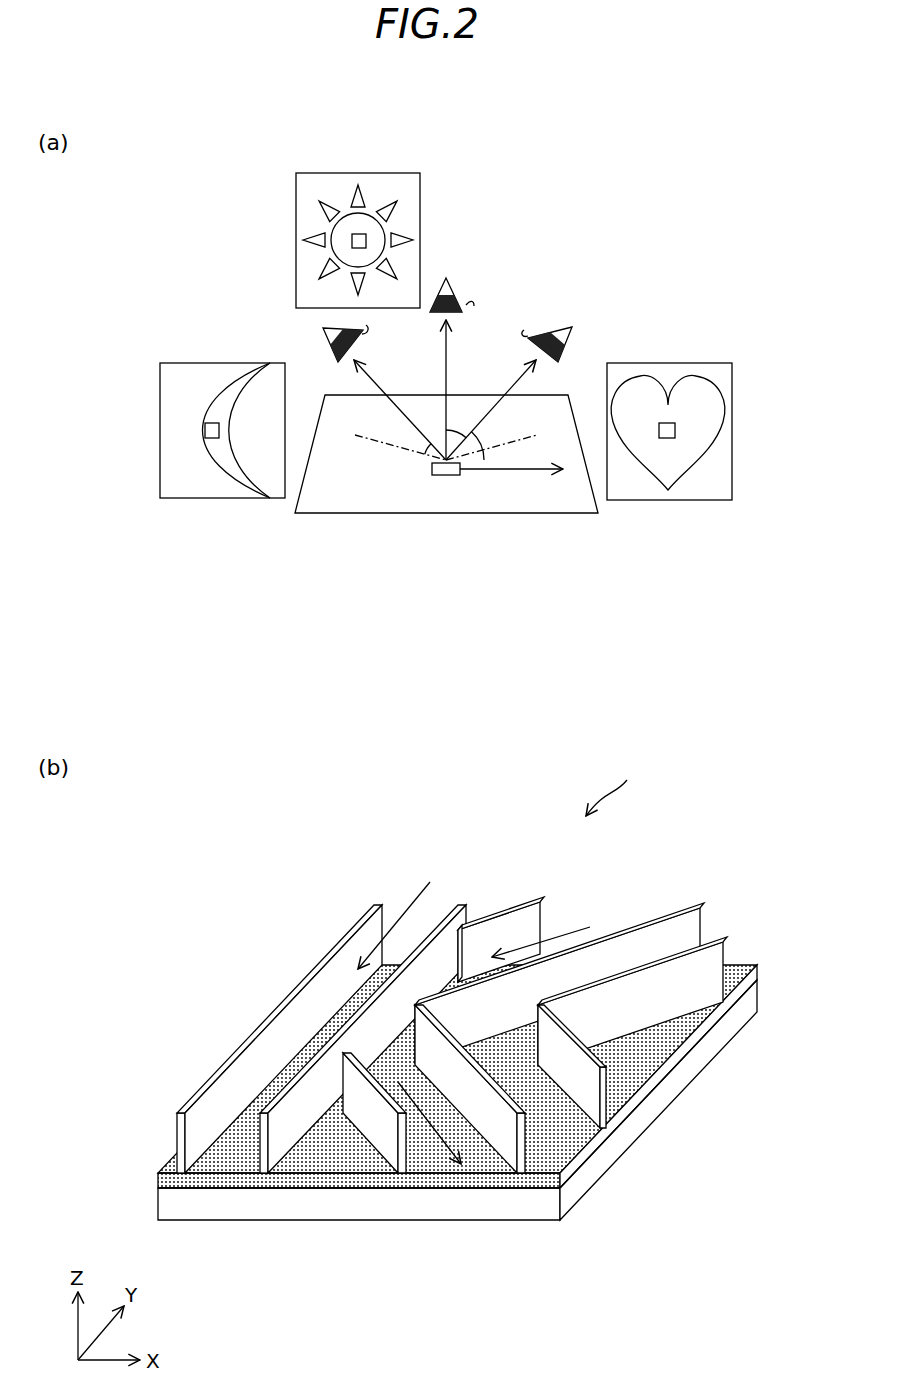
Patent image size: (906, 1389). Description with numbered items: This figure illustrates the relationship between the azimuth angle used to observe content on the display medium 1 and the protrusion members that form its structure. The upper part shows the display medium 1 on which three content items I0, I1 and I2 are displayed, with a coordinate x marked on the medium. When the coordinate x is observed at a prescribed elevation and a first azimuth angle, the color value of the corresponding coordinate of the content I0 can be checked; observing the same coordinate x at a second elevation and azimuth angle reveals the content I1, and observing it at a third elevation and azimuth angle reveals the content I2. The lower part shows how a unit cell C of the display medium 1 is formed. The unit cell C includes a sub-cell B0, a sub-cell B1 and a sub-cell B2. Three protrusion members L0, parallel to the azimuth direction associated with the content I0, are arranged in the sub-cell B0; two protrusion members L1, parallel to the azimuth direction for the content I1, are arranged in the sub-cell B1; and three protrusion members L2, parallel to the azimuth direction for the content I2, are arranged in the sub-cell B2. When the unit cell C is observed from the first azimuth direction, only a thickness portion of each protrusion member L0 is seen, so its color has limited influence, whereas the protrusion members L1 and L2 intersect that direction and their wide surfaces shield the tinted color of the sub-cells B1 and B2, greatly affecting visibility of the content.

The display medium 1 is at (388, 513).
The coordinate x X is at (446, 484).
The content I1 is at (352, 240).
The content I2 is at (205, 428).
The content I0 is at (664, 362).
The sub-cell B0 is at (740, 962).
The sub-cell B1 is at (222, 1173).
The sub-cell B2 is at (583, 1160).
The protrusion member L1 is at (333, 965).
The protrusion member L0 is at (508, 920).
The protrusion member L2 is at (378, 1142).
The unit cell C is at (616, 783).